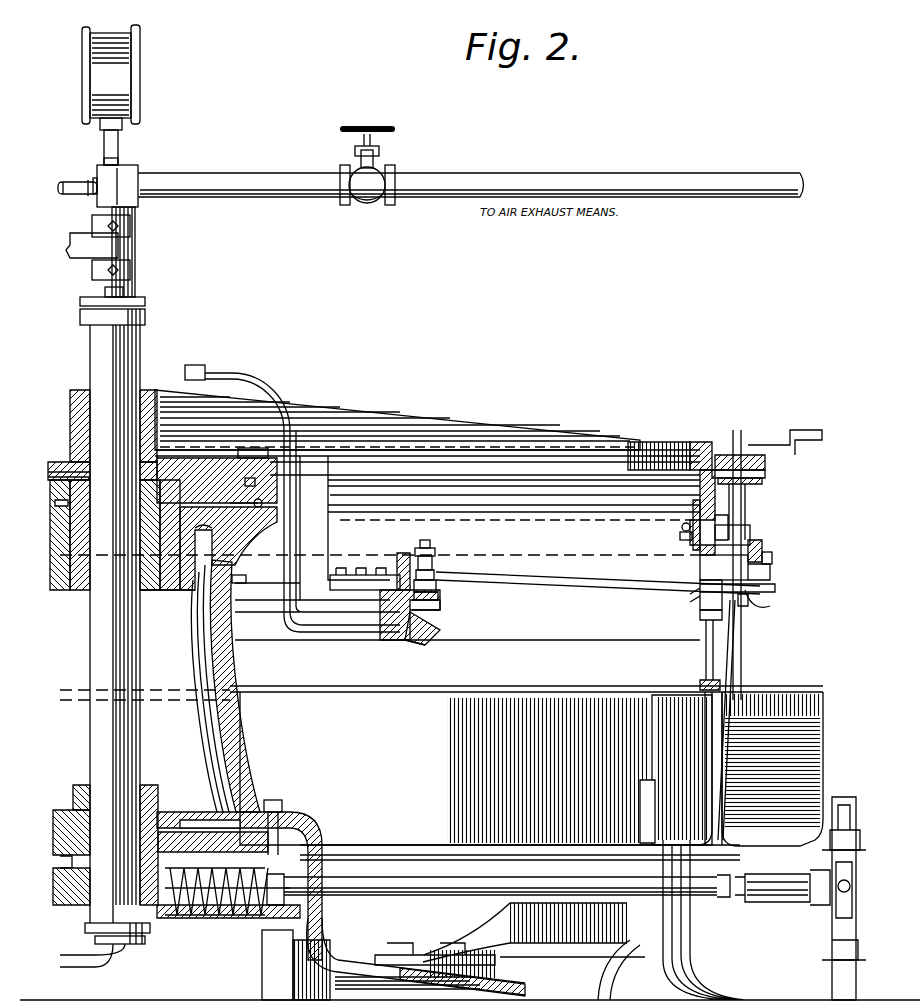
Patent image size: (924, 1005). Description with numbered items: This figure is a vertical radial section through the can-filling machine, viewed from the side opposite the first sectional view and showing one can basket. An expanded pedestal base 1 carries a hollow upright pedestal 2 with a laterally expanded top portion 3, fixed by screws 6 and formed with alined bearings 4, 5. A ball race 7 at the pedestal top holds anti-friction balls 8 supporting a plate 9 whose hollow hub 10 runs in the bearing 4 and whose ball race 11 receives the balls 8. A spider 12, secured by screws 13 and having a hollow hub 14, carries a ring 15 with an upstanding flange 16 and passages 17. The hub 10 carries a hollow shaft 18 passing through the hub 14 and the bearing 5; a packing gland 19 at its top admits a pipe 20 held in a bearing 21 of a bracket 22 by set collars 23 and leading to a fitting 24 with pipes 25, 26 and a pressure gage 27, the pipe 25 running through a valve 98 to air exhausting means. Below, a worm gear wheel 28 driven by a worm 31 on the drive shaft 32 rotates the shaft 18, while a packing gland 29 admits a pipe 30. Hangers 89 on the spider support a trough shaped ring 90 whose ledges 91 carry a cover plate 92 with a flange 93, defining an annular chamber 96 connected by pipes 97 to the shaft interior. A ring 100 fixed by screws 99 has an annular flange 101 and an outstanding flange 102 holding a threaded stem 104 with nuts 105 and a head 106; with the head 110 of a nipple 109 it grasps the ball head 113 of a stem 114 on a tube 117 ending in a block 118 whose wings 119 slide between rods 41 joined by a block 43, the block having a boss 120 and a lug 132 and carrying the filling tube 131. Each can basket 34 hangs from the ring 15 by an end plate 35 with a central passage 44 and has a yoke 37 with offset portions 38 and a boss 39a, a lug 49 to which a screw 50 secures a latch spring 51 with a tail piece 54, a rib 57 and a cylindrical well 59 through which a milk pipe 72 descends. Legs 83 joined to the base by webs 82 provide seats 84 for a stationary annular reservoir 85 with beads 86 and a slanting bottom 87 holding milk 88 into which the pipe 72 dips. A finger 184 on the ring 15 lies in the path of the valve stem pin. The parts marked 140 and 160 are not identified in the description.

The pedestal base 1 is at (324, 872).
The hollow upright pedestal 2 is at (244, 742).
The laterally expanded top portion 3 is at (243, 521).
The bearing 4 is at (62, 590).
The bearing 5 is at (78, 790).
The bolts or screws 6 is at (272, 805).
The ball race 7 is at (228, 548).
The anti-friction balls 8 is at (268, 470).
The plate 9 is at (193, 480).
The hollow hub 10 is at (152, 592).
The ball race 11 is at (256, 500).
The spider 12 is at (220, 452).
The bolts or screws 13 is at (250, 468).
The hollow hub 14 is at (70, 408).
The ring 15 is at (740, 455).
The upstanding flange 16 is at (698, 450).
The passages 17 is at (735, 455).
The hollow shaft 18 is at (115, 624).
The packing gland 19 is at (146, 312).
The pipe 20 is at (125, 289).
The bearing 21 is at (136, 246).
The bracket 22 is at (82, 250).
The set collars 23 is at (132, 222).
The fitting 24 is at (118, 180).
The pipe 25 is at (261, 180).
The pipe 26 is at (68, 180).
The pressure gage 27 is at (142, 70).
The worm gear wheel 28 is at (330, 898).
The packing gland 29 is at (150, 938).
The pipe 30 is at (66, 965).
The worm 31 is at (176, 830).
The drive shaft 32 is at (438, 882).
The can basket 34 is at (700, 490).
The end plate 35 is at (764, 480).
The yoke 37 is at (668, 460).
The offset portions 38 is at (693, 512).
The boss 39a is at (682, 526).
The rods 41 is at (706, 656).
The block 43 is at (700, 684).
The central passage 44 is at (760, 470).
The lug 49 is at (762, 546).
The screw 50 is at (772, 558).
The latch spring 51 is at (760, 578).
The tail piece 54 is at (760, 598).
The rib 57 is at (750, 533).
The cylindrical extension 59 is at (700, 564).
The pipe 72 is at (735, 660).
The web extensions 82 is at (510, 940).
The supporting blocks 83 is at (470, 920).
The seat 84 is at (645, 832).
The reservoir 85 is at (481, 768).
The beads 86 is at (548, 686).
The bottom portion 87 is at (814, 898).
The milk 88 is at (772, 769).
The hangers 89 is at (329, 498).
The trough shaped ring 90 is at (408, 640).
The marginal ledges 91 is at (440, 618).
The annular plate 92 is at (440, 598).
The flange 93 is at (250, 610).
The annular chamber 96 is at (415, 635).
The pipes 97 is at (220, 368).
The valve 98 is at (355, 205).
The screws 99 is at (368, 565).
The ring 100 is at (352, 582).
The annular flange 101 is at (264, 578).
The outstanding flange 102 is at (432, 570).
The threaded stem 104 is at (425, 545).
The nuts 105 is at (428, 560).
The expanded head 106 is at (436, 576).
The nipples 109 is at (440, 606).
The head 110 is at (440, 590).
The ball head 113 is at (400, 565).
The stem 114 is at (438, 585).
The tube 117 is at (548, 578).
The block 118 is at (700, 616).
The wings 119 is at (700, 584).
The boss 120 is at (748, 600).
The tube 131 is at (745, 492).
The lug 132 is at (772, 590).
The screw 140 is at (680, 537).
The block 160 is at (728, 520).
The finger 184 is at (790, 432).